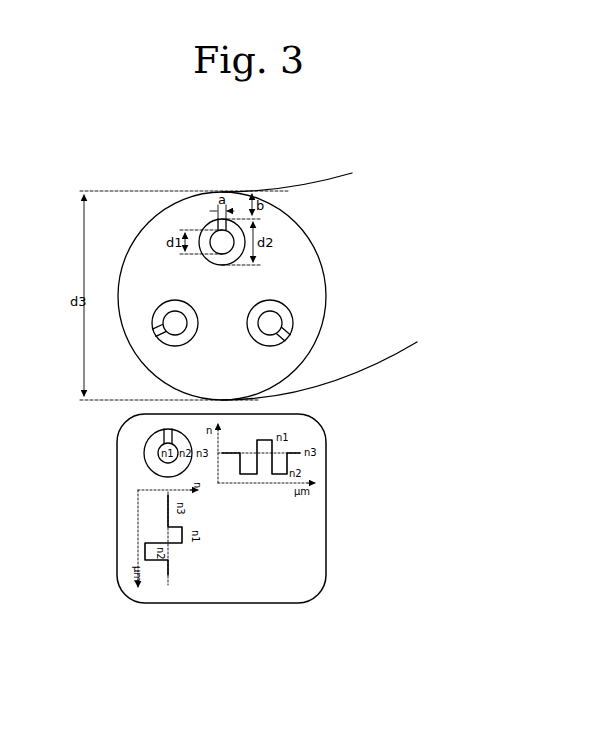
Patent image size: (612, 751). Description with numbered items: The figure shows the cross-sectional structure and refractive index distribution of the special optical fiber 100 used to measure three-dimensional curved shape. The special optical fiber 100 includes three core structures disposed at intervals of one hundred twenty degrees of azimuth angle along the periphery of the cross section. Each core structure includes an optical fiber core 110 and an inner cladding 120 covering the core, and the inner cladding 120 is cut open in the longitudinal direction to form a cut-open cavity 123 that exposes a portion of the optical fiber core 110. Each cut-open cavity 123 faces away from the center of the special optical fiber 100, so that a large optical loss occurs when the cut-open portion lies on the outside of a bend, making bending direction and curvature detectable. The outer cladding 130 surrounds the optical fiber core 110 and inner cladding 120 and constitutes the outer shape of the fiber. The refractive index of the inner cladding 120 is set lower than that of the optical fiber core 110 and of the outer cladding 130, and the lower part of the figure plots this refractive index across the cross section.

The special optical fiber 100 is at (320, 385).
The optical fiber core 110 is at (270, 323).
The inner cladding 120 is at (269, 302).
The cut-open cavity 123 is at (286, 335).
The outer cladding 130 is at (299, 252).